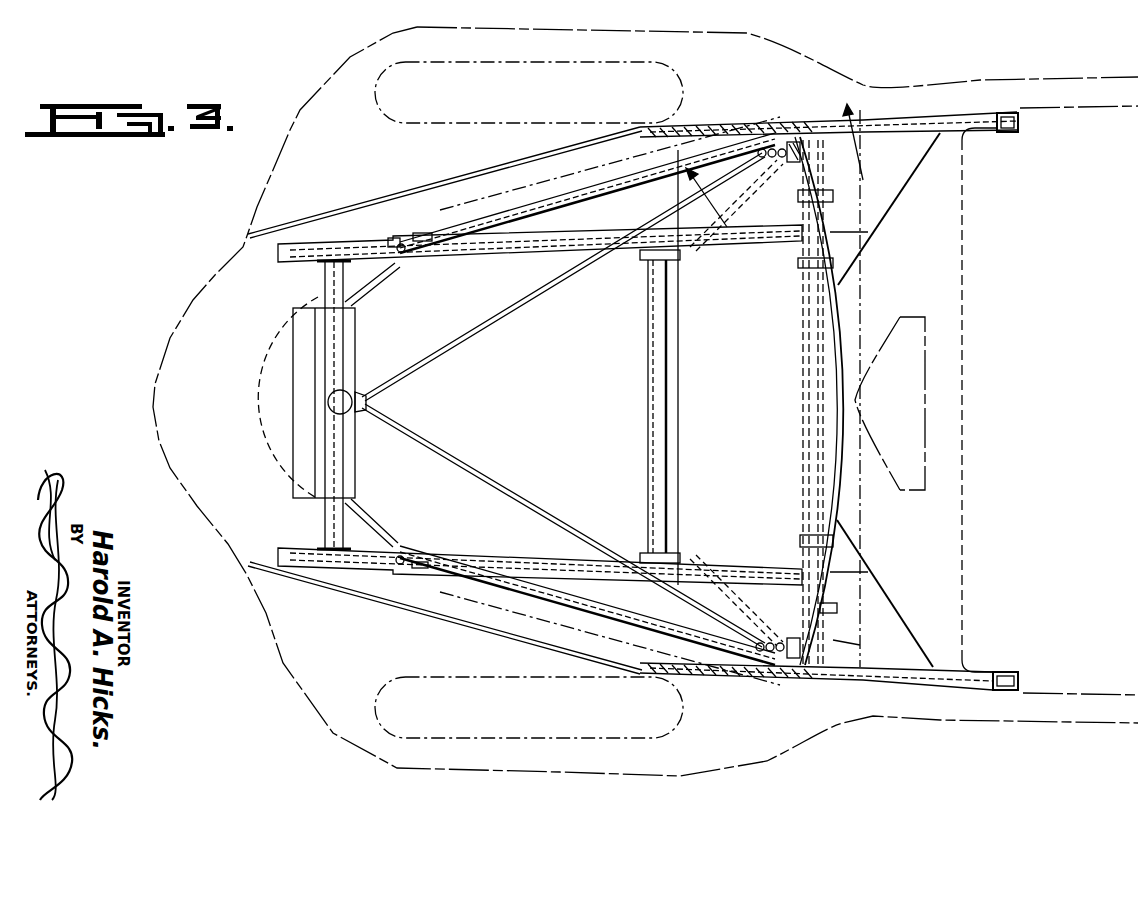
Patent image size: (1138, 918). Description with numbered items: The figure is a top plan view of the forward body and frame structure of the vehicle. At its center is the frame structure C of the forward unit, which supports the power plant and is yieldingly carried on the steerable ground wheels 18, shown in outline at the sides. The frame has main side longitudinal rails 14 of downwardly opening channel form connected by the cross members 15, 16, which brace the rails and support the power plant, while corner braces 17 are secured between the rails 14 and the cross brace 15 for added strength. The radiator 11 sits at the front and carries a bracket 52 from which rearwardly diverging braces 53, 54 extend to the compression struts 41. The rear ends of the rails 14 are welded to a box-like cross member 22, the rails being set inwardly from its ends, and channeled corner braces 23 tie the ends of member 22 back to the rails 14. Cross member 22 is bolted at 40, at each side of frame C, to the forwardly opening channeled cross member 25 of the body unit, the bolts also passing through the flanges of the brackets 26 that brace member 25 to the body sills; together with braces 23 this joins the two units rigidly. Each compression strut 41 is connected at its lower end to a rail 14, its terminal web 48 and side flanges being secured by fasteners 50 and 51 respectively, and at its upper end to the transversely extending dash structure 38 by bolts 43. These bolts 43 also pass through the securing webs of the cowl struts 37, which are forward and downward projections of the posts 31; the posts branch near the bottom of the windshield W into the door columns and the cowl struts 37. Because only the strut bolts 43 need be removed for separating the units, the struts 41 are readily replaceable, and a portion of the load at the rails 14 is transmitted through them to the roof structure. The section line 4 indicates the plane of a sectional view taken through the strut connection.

The radiator 11 is at (298, 403).
The main side longitudinal rails 14 is at (468, 262).
The cross member 15 is at (326, 520).
The cross member 16 is at (650, 420).
The corner braces 17 is at (362, 535).
The steerable ground wheels 18 is at (382, 108).
The rear cross member 22 is at (803, 440).
The channeled corner braces 23 is at (740, 200).
The channeled cross member 25 is at (803, 312).
The brackets 26 is at (860, 220).
The post 31 is at (1018, 123).
The cowl strut 37 is at (840, 643).
The dash structure 38 is at (672, 286).
The bolted connection 40 is at (840, 608).
The compression strut 41 is at (578, 200).
The bolts 43 is at (778, 145).
The terminal web 48 is at (392, 244).
The fasteners 50 is at (402, 255).
The fasteners 51 is at (420, 232).
The bracket 52 is at (358, 394).
The brace 53 is at (442, 448).
The brace 54 is at (470, 345).
The section line 4- 4 is at (784, 385).
The frame structure C is at (290, 264).
The windshield W is at (964, 223).